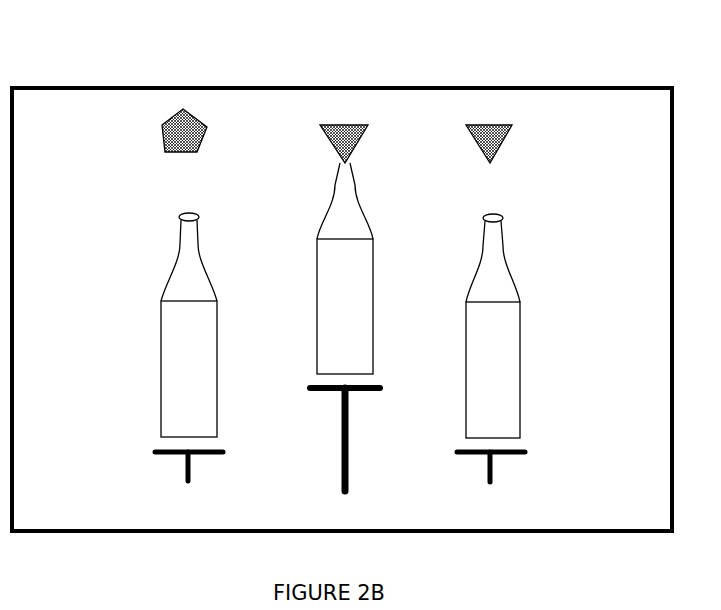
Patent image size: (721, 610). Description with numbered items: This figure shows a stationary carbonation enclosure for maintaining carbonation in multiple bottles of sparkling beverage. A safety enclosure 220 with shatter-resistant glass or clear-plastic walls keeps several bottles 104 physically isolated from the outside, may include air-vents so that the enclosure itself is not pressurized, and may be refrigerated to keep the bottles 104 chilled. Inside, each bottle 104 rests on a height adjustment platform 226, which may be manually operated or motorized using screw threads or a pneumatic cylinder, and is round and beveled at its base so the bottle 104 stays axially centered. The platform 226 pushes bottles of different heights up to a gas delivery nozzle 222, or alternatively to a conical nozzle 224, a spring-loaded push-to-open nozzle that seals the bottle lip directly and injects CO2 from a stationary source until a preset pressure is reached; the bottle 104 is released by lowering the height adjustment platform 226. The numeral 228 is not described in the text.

The bottle 104 is at (172, 290).
The safety enclosure 220 is at (540, 87).
The gas delivery nozzle 222 is at (182, 117).
The conical nozzle 224 is at (337, 126).
The height adjustment platform 226 is at (152, 452).
The lift shaft / actuator 228 is at (352, 427).